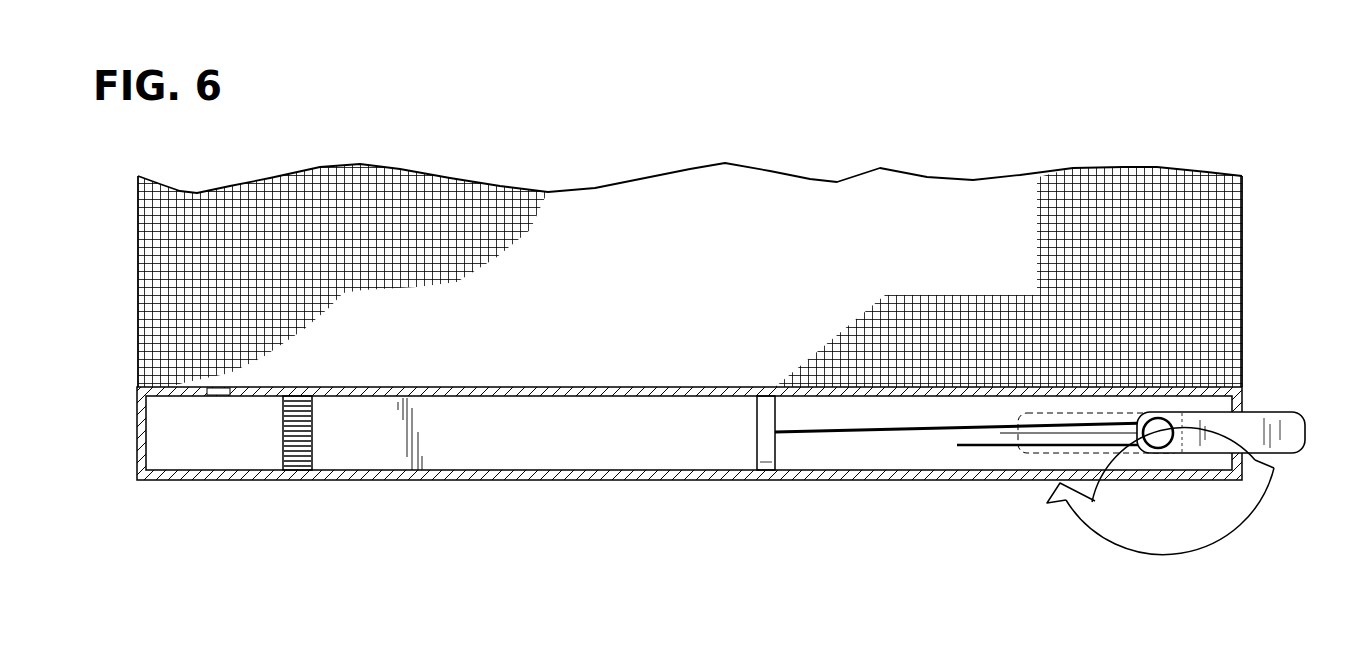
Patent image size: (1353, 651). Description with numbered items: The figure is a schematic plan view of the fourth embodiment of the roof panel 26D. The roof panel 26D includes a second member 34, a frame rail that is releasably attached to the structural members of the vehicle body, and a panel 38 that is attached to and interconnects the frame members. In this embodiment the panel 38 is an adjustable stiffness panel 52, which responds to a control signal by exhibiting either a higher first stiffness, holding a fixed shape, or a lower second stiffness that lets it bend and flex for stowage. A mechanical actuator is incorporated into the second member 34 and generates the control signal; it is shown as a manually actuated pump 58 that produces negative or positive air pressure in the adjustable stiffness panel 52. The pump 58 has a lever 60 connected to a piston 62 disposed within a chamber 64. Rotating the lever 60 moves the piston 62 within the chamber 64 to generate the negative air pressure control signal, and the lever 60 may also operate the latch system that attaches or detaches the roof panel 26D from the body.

The roof panel 26D is at (836, 78).
The adjustable stiffness panel 52 is at (597, 213).
The panel 38 is at (927, 215).
The second member 34 is at (684, 480).
The chamber 64 is at (630, 445).
The piston 62 is at (768, 446).
The manually actuated pump 58 is at (1149, 410).
The lever 60 is at (1278, 422).